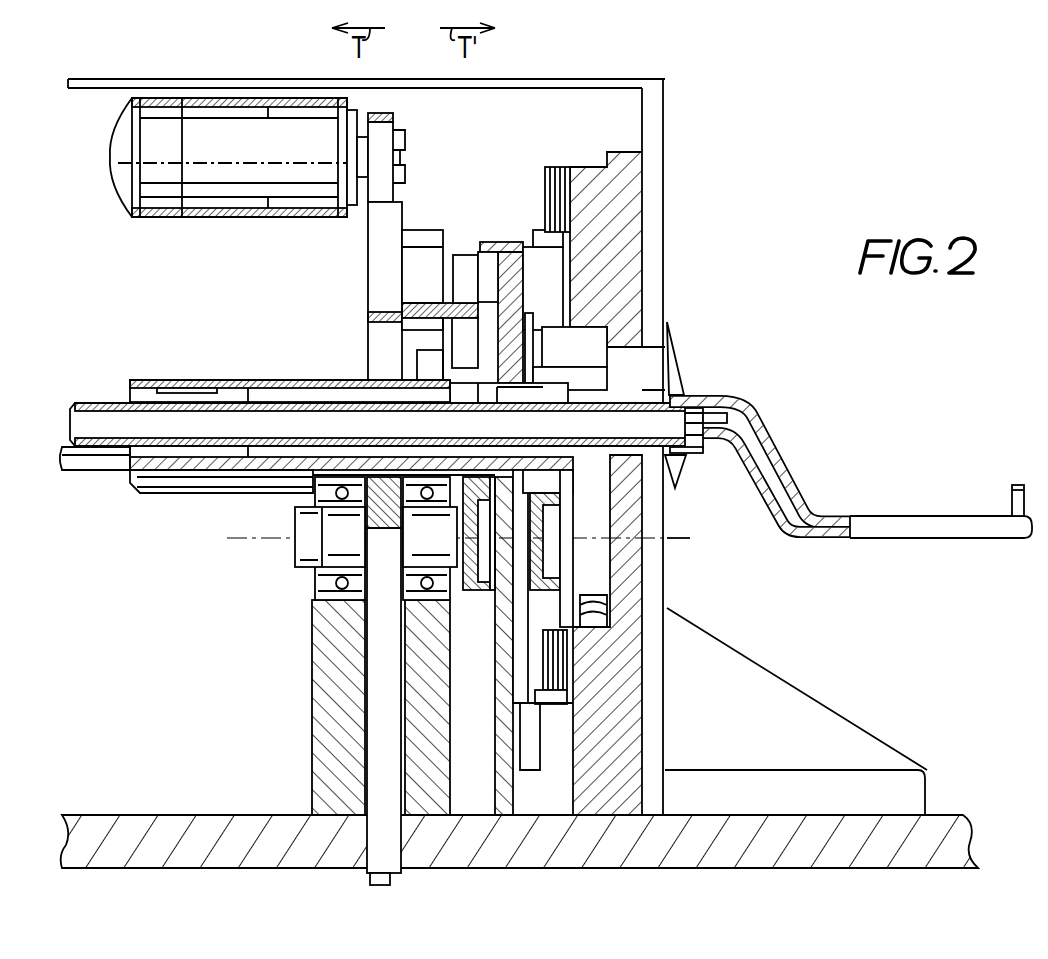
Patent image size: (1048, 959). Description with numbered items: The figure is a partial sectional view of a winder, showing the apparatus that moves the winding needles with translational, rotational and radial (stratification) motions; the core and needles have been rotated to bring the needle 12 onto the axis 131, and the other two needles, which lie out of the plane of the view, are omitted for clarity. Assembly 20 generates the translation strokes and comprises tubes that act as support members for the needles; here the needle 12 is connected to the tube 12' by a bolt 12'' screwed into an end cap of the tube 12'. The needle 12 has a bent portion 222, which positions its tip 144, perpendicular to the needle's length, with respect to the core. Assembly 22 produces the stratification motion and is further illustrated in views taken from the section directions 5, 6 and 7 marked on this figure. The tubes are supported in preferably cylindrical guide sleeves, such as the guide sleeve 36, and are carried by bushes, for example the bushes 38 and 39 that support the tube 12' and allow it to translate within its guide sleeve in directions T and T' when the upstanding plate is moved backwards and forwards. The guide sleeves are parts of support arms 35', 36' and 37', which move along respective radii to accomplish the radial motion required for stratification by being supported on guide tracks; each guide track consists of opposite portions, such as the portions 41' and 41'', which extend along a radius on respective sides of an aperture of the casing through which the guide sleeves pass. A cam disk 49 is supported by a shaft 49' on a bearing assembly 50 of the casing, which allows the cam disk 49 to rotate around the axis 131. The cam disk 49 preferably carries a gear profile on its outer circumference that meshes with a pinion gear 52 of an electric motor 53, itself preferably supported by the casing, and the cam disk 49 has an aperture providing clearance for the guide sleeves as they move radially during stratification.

The section direction 5— 5 is at (343, 197).
The section direction for FIG. 6 is at (227, 237).
The section direction for FIG. 7 is at (306, 183).
The needle 12 is at (929, 545).
The tube 12' is at (380, 397).
The bolt 12'' is at (714, 395).
The assembly 20 is at (206, 357).
The assembly 22 is at (562, 69).
The support arm 35' is at (566, 541).
The guide sleeve 36 is at (290, 365).
The support arm 36' is at (502, 283).
The support arm 37' is at (474, 565).
The bush 38 is at (190, 453).
The bush 39 is at (551, 396).
The guide track portion 41' is at (576, 161).
The guide track portion 41'' is at (514, 722).
The cam disk 49 is at (394, 291).
The shaft 49' is at (373, 547).
The bearing assembly 50 is at (337, 600).
The pinion gear 52 is at (393, 114).
The electric motor 53 is at (211, 102).
The axis 131 is at (690, 538).
The tip 144 is at (1012, 502).
The bent portion 222 is at (767, 453).